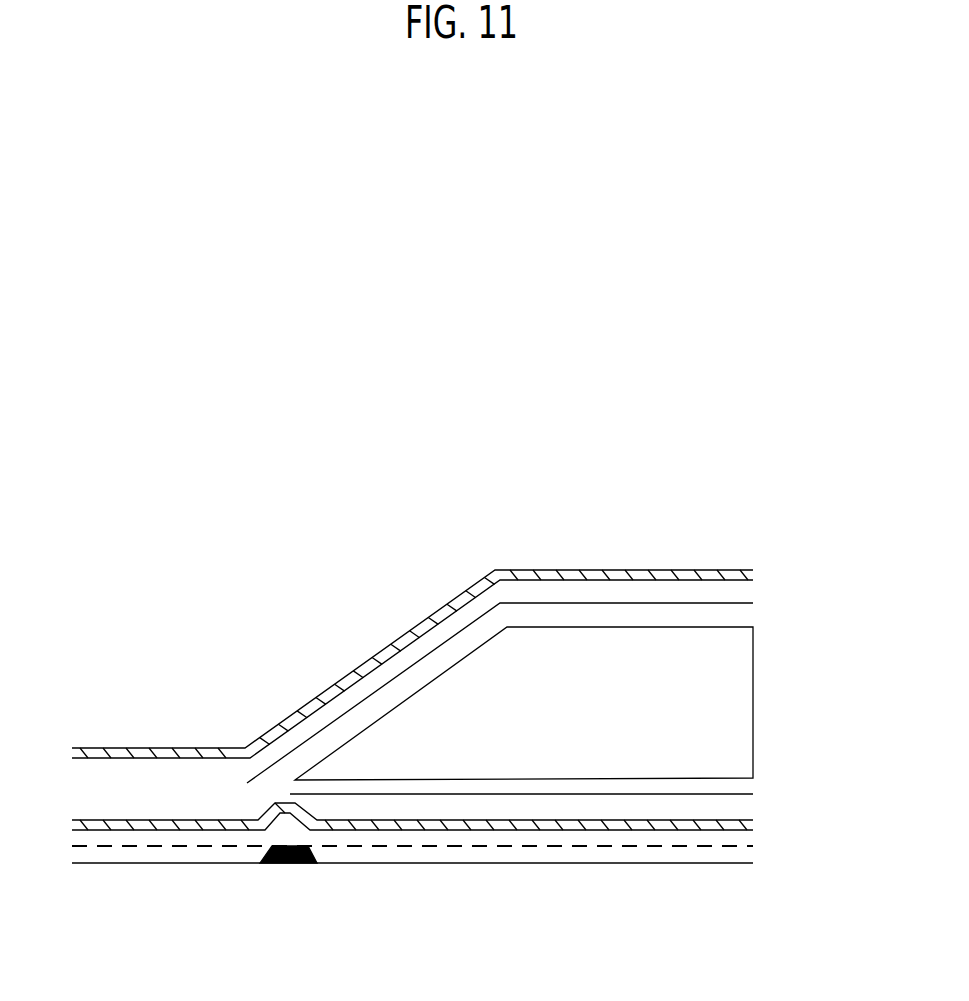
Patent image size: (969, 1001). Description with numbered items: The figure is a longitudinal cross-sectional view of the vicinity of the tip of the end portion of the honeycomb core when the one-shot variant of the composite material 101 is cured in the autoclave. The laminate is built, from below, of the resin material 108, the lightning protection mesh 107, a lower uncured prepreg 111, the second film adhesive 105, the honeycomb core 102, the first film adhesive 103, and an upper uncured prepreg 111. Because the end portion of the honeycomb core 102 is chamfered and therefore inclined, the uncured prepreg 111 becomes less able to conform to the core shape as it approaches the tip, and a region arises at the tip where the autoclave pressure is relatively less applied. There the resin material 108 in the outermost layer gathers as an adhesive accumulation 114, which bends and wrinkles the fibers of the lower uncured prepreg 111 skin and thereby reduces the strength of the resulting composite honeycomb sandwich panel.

The composite material 101 is at (182, 580).
The honeycomb core 102 is at (735, 681).
The first film adhesive 103 is at (740, 600).
The second film adhesive 105 is at (738, 795).
The lightning protection mesh 107 is at (745, 845).
The resin material 108 is at (712, 865).
The uncured prepreg 111 is at (740, 566).
The adhesive accumulation 114 is at (288, 868).